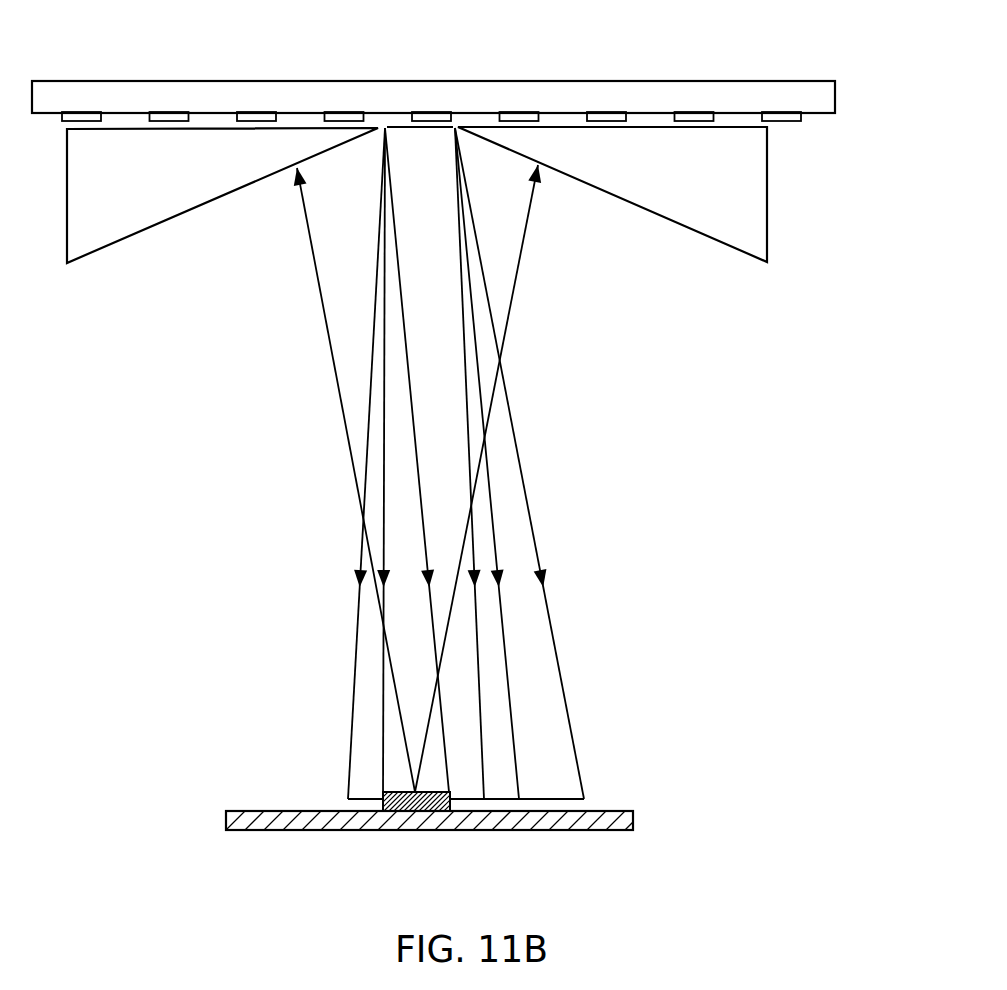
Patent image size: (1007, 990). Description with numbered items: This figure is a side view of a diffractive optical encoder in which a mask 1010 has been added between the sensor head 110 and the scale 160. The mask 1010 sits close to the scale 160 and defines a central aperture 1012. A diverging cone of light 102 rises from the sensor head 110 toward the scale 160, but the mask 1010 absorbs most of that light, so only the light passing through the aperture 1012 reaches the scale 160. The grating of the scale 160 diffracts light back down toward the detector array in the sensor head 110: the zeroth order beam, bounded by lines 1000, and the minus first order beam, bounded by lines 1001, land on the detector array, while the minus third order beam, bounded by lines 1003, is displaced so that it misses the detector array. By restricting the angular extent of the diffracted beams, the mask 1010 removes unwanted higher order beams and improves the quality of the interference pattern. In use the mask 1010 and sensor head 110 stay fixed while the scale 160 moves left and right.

The scale 160 is at (700, 78).
The mask 1010 is at (768, 200).
The central aperture 1012 is at (398, 127).
The diverging cone of light 102 is at (522, 250).
The zeroth order beam boundaries 1000 is at (352, 767).
The minus first order beam boundaries 1001 is at (381, 745).
The minus third order beam boundaries 1003 is at (440, 704).
The sensor head 110 is at (578, 832).